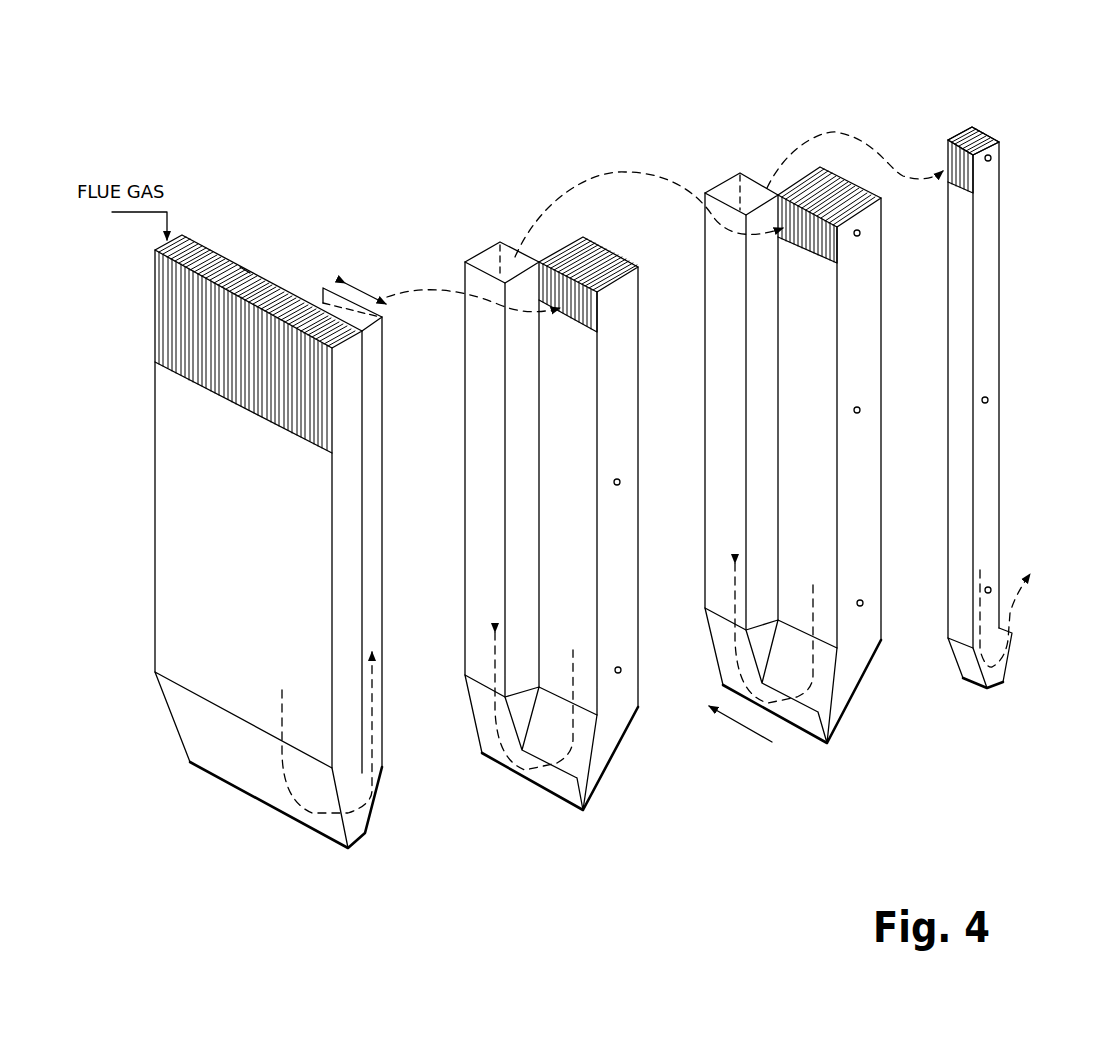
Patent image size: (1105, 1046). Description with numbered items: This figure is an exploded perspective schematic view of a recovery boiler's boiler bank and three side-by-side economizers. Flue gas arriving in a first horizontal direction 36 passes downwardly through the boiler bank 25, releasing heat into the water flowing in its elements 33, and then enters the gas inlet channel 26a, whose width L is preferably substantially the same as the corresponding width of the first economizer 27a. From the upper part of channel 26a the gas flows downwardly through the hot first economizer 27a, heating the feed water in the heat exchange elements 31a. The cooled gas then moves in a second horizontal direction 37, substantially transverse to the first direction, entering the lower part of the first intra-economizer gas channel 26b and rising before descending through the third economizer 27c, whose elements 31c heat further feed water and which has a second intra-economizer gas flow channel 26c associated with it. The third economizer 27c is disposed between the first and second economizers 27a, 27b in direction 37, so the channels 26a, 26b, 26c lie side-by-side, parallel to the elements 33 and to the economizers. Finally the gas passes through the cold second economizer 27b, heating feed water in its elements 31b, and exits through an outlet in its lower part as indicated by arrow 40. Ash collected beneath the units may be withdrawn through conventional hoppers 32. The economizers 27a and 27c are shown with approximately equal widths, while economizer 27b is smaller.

The boiler bank 25 is at (297, 468).
The gas inlet channel 26a is at (304, 468).
The first intra-economizer gas channel 26b is at (550, 451).
The second intra-economizer gas flow channel 26c is at (796, 385).
The first economizer 27a is at (581, 451).
The second economizer 27b is at (1011, 346).
The third economizer 27c is at (823, 385).
The heat exchange elements of first economizer 31a is at (617, 258).
The heat exchange elements of second economizer 31b is at (981, 130).
The heat exchange elements of third economizer 31c is at (840, 190).
The hoppers 32 is at (357, 838).
The elements of boiler bank 33 is at (205, 252).
The first horizontal direction 36 is at (312, 815).
The second horizontal direction 37 is at (742, 730).
The outlet flow arrow 40 is at (1028, 592).
The width of gas channel L is at (372, 286).